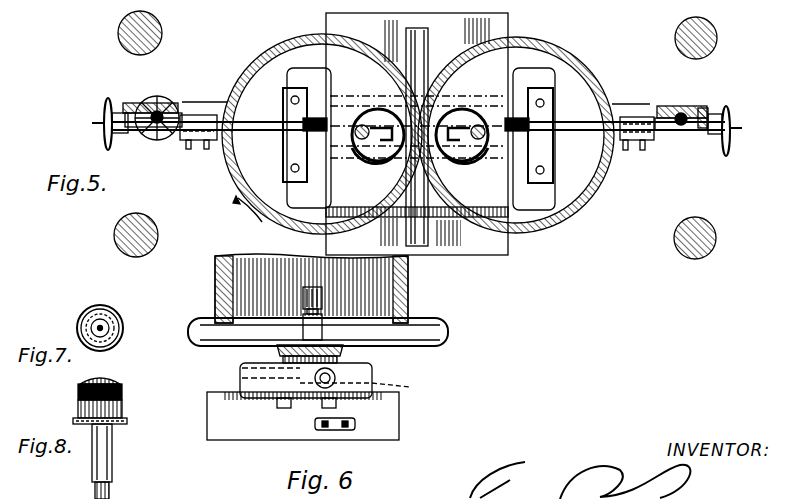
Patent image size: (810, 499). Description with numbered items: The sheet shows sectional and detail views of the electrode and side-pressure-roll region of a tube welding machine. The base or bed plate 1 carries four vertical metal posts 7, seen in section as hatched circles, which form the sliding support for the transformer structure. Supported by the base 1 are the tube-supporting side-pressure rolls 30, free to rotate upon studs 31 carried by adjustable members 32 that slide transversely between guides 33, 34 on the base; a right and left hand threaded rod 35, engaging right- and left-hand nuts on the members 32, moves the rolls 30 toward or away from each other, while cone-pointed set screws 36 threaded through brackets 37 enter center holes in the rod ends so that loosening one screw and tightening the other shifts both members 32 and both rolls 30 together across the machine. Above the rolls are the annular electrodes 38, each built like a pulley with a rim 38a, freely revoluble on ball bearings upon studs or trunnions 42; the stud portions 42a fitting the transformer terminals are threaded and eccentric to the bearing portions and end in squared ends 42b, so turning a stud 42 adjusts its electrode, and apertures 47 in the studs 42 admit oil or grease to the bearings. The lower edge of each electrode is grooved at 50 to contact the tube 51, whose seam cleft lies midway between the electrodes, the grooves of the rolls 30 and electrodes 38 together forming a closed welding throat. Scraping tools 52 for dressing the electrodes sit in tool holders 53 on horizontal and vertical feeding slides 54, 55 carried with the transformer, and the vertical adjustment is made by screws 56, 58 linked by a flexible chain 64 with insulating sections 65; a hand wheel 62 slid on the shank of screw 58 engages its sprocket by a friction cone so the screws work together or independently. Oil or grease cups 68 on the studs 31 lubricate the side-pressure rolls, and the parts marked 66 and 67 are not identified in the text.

In FIG. 5, the base 1 is at (494, 250).
In FIG. 6, the base 1 is at (390, 413).
In FIG. 5, the metal posts 7 is at (117, 33).
In FIG. 5, the side-pressure rolls 30 is at (380, 108).
In FIG. 6, the side-pressure rolls 30 is at (320, 333).
In FIG. 5, the studs 31 is at (345, 165).
In FIG. 6, the studs 31 is at (303, 330).
In FIG. 5, the adjustable members 32 is at (513, 150).
In FIG. 6, the adjustable members 32 is at (337, 367).
In FIG. 5, the guide 33 is at (345, 78).
In FIG. 6, the guide 33 is at (372, 378).
In FIG. 5, the guide 34 is at (328, 230).
In FIG. 6, the guide 34 is at (242, 366).
In FIG. 5, the right and left hand threaded rod 35 is at (520, 87).
In FIG. 6, the right and left hand threaded rod 35 is at (380, 385).
In FIG. 5, the set screws 36 is at (265, 100).
In FIG. 6, the set screws 36 is at (333, 395).
In FIG. 5, the brackets 37 is at (283, 148).
In FIG. 6, the brackets 37 is at (290, 395).
In FIG. 5, the electrodes 38 is at (238, 192).
In FIG. 6, the electrodes 38 is at (218, 283).
In FIG. 5, the rim 38a is at (568, 245).
In FIG. 7, the studs or trunnions 42 is at (110, 310).
In FIG. 8, the studs or trunnions 42 is at (107, 460).
In FIG. 7, the stud portions 42a is at (92, 312).
In FIG. 8, the stud portions 42a is at (123, 404).
In FIG. 7, the squared ends 42b is at (113, 340).
In FIG. 8, the squared ends 42b is at (122, 379).
In FIG. 7, the apertures 47 is at (103, 328).
In FIG. 8, the apertures 47 is at (117, 414).
In FIG. 5, the groove 50 is at (303, 230).
In FIG. 6, the groove 50 is at (407, 320).
In FIG. 5, the tube 51 is at (430, 50).
In FIG. 6, the tube 51 is at (450, 320).
In FIG. 5, the scraping tools 52 is at (212, 140).
In FIG. 5, the tool holders 53 is at (190, 150).
In FIG. 5, the horizontal tool feeding slide 54 is at (162, 140).
In FIG. 5, the vertical tool feeding slide 55 is at (118, 110).
In FIG. 5, the vertical adjusting screw 56 is at (683, 127).
In FIG. 5, the vertical adjusting screw 58 is at (148, 100).
In FIG. 5, the hand wheel 62 is at (143, 138).
In FIG. 5, the sprocket-chain or chain-belt 64 is at (643, 106).
In FIG. 6, the sprocket-chain or chain-belt 64 is at (353, 427).
In FIG. 5, the insulating sections 65 is at (205, 113).
In FIG. 5, the collar 66 is at (703, 110).
In FIG. 5, the rod 67 is at (178, 104).
In FIG. 5, the oil or grease cups 68 is at (365, 118).
In FIG. 6, the oil or grease cups 68 is at (317, 290).